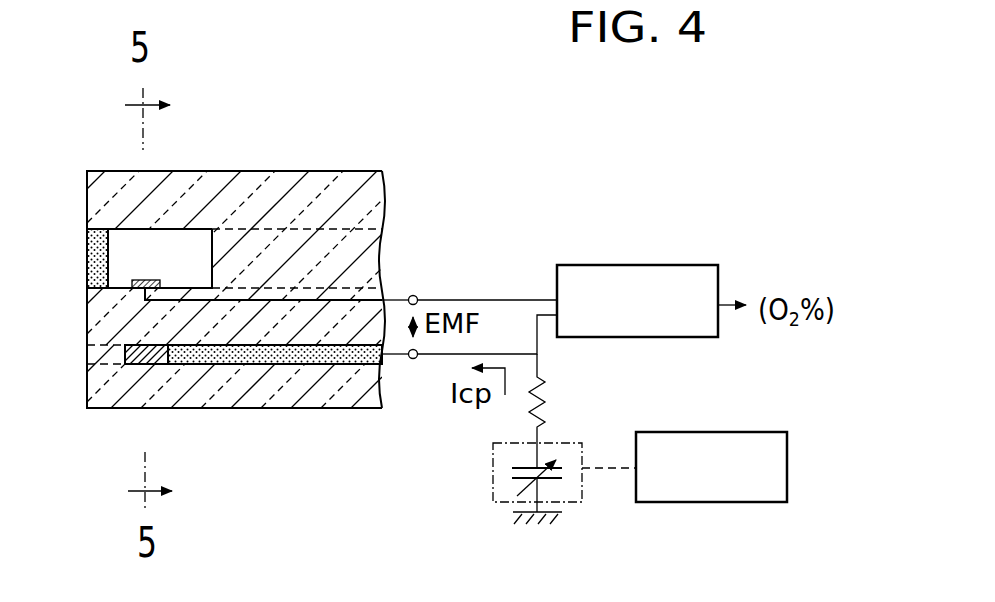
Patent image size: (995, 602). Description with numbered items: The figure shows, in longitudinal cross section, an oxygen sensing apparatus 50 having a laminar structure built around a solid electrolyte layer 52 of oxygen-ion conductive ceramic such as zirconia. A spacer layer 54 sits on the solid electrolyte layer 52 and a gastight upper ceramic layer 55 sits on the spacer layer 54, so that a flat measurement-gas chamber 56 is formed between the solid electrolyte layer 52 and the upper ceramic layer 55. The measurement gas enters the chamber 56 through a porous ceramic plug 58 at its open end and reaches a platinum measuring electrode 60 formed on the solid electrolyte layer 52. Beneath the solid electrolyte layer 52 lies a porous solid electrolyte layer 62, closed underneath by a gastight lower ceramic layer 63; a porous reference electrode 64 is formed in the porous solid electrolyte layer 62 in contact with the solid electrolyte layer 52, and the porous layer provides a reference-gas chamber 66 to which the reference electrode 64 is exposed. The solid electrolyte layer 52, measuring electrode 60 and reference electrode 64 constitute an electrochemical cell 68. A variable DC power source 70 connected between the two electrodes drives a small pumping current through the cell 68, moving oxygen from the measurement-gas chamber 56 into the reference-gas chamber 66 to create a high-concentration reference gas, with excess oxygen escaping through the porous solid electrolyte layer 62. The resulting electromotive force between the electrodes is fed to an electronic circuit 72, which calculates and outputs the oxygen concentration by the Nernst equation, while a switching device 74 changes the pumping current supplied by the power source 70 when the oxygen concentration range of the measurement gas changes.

The oxygen sensing apparatus 50 is at (388, 104).
The solid electrolyte layer 52 is at (110, 318).
The spacer layer 54 is at (383, 256).
The upper ceramic layer 55 is at (229, 172).
The measurement-gas chamber 56 is at (167, 240).
The porous ceramic plug 58 is at (97, 251).
The measuring electrode 60 is at (152, 282).
The porous solid electrolyte layer 62 is at (311, 357).
The lower ceramic layer 63 is at (245, 395).
The reference electrode 64 is at (127, 354).
The reference-gas chamber 66 is at (275, 430).
The electrochemical cell 68 is at (46, 258).
The DC power source 70 is at (504, 488).
The electronic circuit 72 is at (652, 267).
The switching device 74 is at (722, 433).